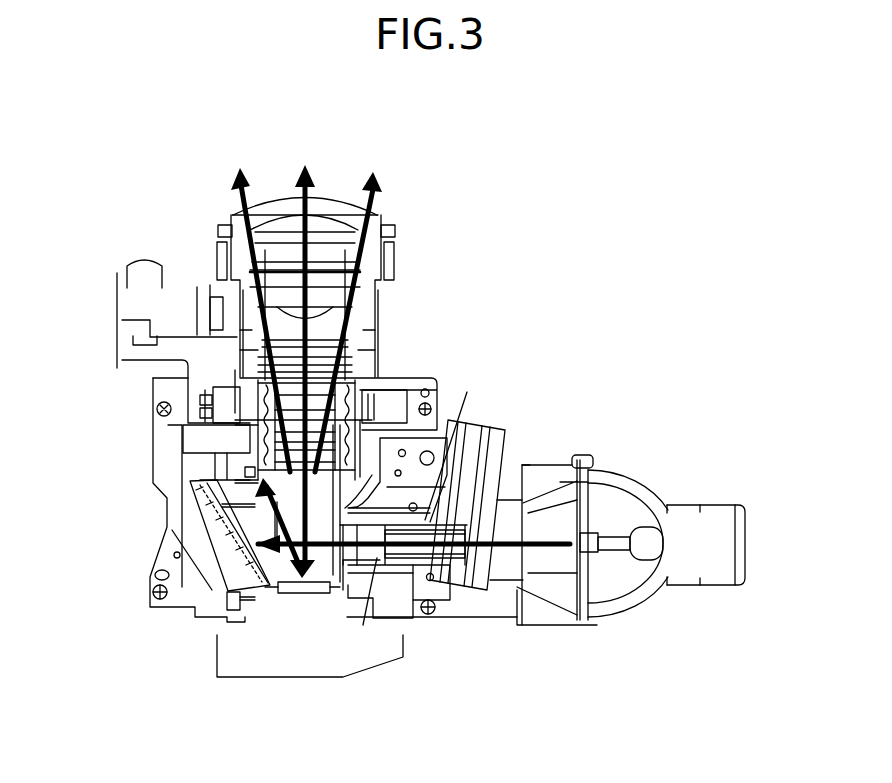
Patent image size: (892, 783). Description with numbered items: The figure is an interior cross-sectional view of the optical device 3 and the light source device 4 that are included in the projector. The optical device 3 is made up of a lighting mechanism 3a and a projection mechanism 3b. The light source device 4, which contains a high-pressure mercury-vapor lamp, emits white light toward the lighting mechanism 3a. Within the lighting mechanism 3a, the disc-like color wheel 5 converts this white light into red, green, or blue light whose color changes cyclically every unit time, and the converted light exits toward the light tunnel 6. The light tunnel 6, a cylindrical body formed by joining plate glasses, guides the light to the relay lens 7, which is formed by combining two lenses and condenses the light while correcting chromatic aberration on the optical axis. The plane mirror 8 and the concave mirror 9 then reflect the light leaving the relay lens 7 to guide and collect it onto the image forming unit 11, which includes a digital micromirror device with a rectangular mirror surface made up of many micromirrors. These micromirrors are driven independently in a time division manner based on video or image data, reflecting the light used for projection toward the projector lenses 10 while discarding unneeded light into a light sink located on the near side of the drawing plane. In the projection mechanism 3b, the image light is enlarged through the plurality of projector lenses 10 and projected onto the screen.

The optical device 3 is at (444, 364).
The lighting mechanism 3a is at (107, 378).
The projection mechanism 3b is at (402, 263).
The light source device 4 is at (607, 632).
The color wheel 5 is at (510, 465).
The light tunnel 6 is at (447, 560).
The relay lens 7 is at (350, 565).
The plane mirror 8 is at (215, 533).
The concave mirror 9 is at (247, 480).
The projector lenses 10 is at (337, 197).
The image forming unit 11 is at (296, 596).